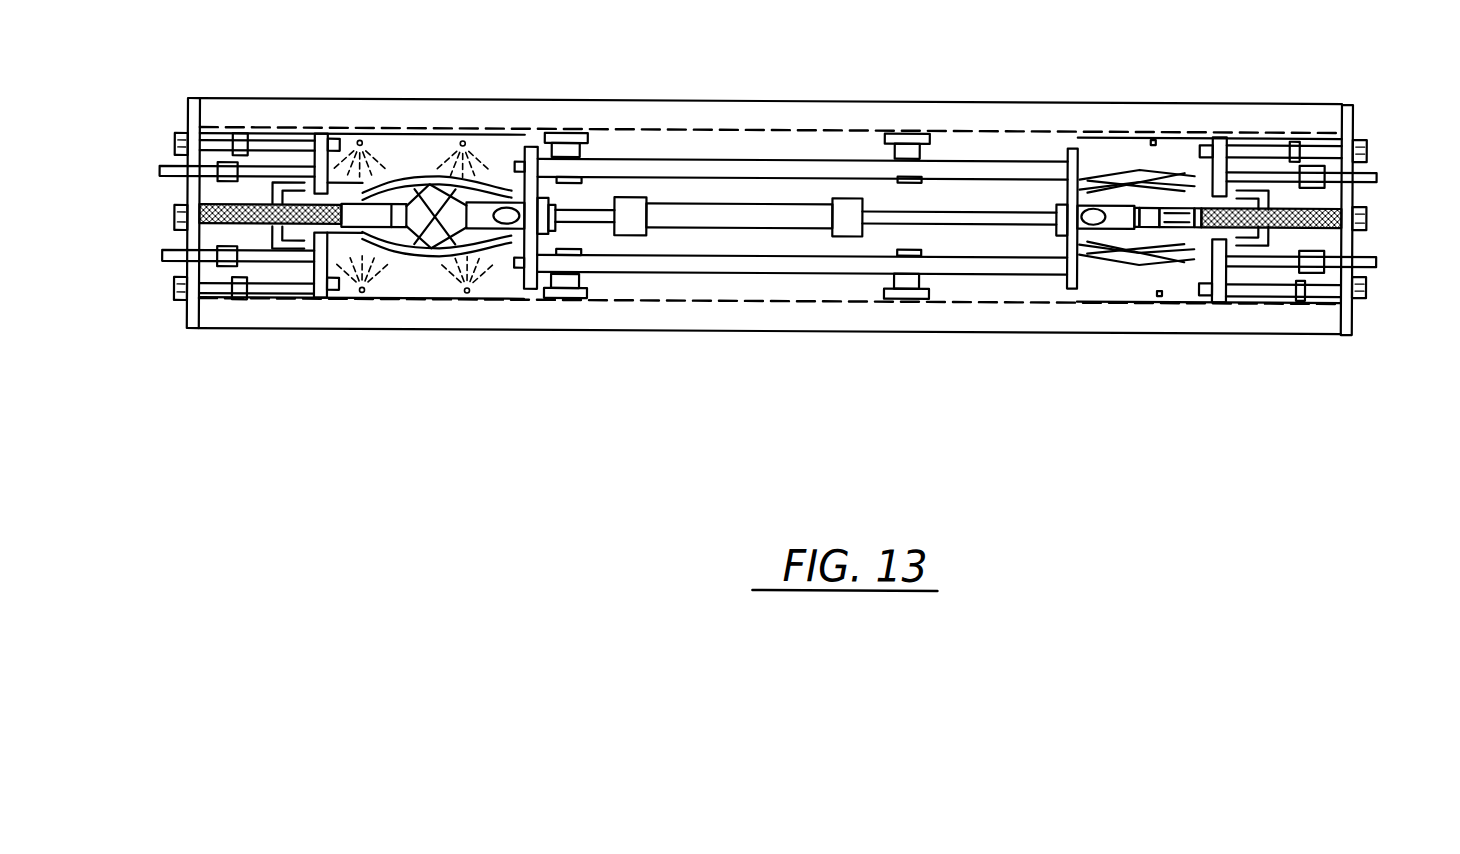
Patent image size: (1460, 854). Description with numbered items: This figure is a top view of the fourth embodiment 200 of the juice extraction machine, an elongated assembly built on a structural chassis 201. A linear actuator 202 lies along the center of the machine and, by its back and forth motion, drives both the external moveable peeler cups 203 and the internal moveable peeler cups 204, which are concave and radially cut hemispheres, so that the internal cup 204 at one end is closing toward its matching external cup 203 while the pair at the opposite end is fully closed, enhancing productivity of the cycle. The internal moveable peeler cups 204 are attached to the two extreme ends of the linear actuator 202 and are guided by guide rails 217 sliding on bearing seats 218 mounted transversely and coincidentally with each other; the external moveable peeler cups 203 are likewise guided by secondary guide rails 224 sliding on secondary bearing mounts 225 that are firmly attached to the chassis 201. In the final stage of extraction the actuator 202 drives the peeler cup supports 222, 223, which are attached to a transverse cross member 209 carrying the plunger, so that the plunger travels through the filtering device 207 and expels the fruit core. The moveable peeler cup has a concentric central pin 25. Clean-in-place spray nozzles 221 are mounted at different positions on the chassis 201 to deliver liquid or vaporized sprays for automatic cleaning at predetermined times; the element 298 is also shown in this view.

The fourth embodiment 200 is at (812, 84).
The structural chassis 201 is at (1295, 329).
The linear actuator 202 is at (712, 226).
The external moveable peeler cup 203 is at (405, 247).
The internal moveable peeler cup 204 is at (470, 238).
The filtering device 207 is at (364, 192).
The transverse cross member 209 is at (186, 239).
The guide rails 217 is at (975, 270).
The bearing seats 218 is at (904, 296).
The clean-in-place spray nozzles 221 is at (467, 243).
The peeler cup support 222 is at (320, 298).
The peeler cup support 223 is at (186, 171).
The secondary guide rails 224 is at (243, 300).
The secondary bearing mounts 225 is at (246, 132).
The concentric central pin 25 is at (514, 198).
The threaded rod 298 is at (1305, 224).